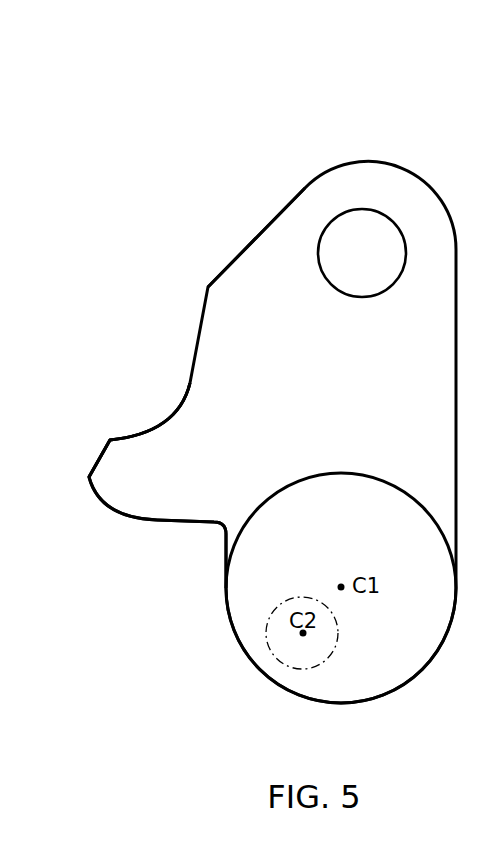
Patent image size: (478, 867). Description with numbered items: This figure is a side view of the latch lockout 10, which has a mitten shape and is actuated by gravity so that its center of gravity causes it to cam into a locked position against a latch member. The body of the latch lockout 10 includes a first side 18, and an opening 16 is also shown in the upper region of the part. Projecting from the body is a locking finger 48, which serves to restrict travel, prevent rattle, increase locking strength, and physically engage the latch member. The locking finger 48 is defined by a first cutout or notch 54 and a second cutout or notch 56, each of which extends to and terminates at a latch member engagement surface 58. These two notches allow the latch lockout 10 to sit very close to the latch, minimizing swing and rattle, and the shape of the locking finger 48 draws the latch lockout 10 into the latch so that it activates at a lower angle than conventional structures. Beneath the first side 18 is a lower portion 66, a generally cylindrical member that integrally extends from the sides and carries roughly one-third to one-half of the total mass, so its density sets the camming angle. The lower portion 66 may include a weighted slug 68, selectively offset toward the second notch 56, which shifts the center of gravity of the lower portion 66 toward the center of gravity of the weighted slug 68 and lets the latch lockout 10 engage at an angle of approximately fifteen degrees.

The latch lockout 10 is at (380, 118).
The mounting aperture 16 is at (351, 264).
The first side 18 is at (300, 393).
The locking finger 48 is at (106, 392).
The first cutout or notch 54 is at (190, 385).
The second cutout or notch 56 is at (217, 527).
The latch member engagement surface 58 is at (67, 465).
The lower portion 66 is at (331, 544).
The weighted slug 68 is at (277, 630).